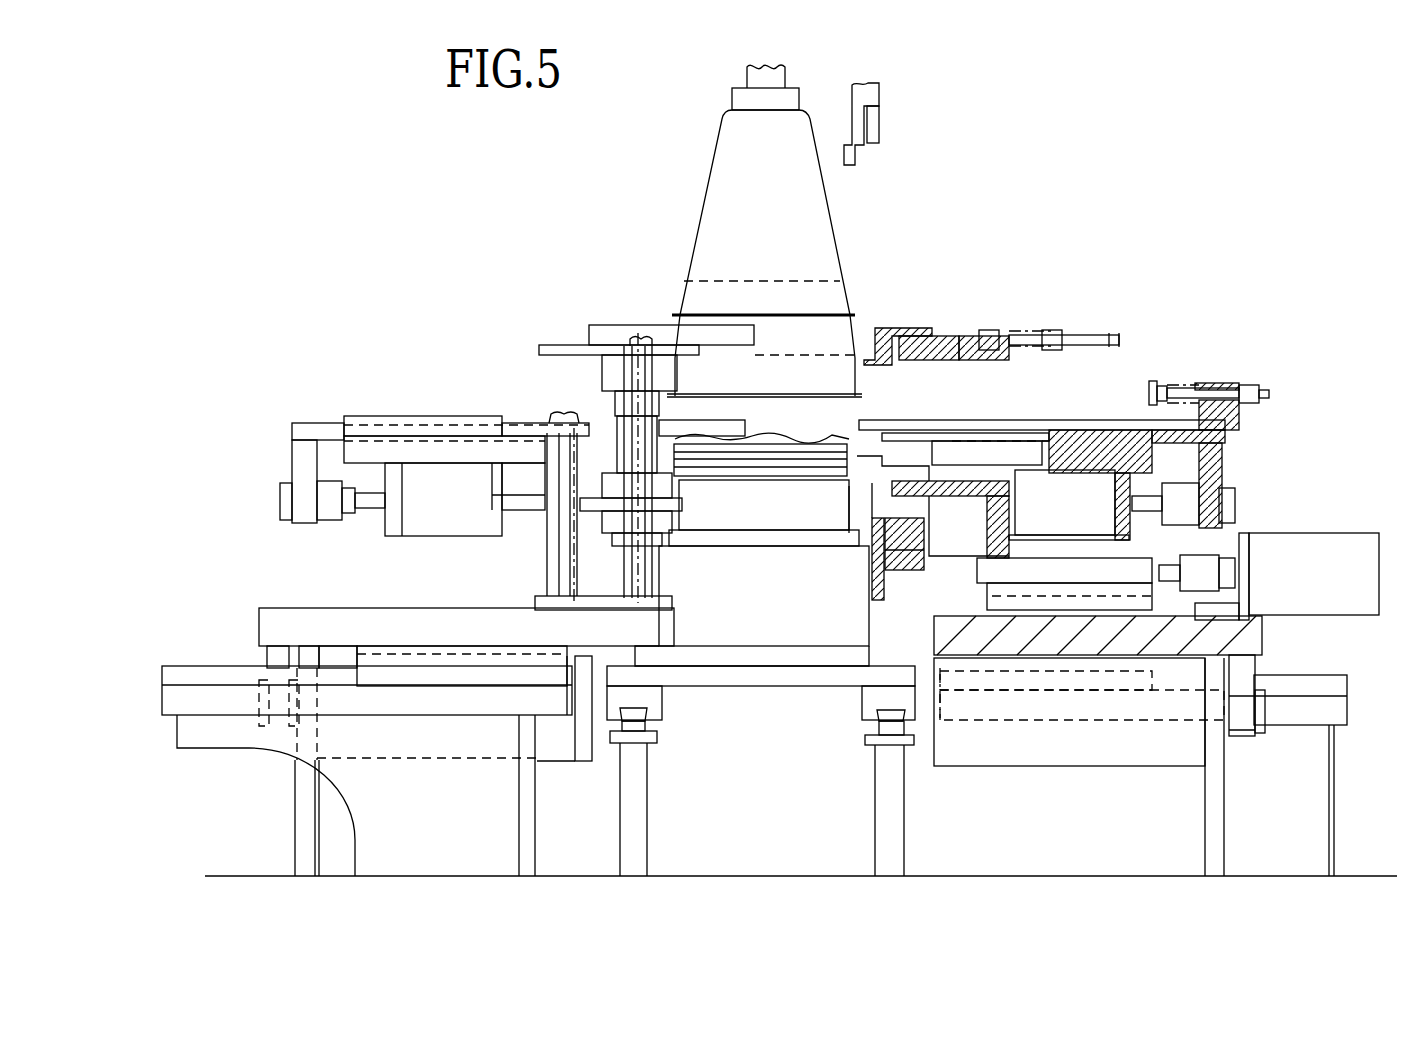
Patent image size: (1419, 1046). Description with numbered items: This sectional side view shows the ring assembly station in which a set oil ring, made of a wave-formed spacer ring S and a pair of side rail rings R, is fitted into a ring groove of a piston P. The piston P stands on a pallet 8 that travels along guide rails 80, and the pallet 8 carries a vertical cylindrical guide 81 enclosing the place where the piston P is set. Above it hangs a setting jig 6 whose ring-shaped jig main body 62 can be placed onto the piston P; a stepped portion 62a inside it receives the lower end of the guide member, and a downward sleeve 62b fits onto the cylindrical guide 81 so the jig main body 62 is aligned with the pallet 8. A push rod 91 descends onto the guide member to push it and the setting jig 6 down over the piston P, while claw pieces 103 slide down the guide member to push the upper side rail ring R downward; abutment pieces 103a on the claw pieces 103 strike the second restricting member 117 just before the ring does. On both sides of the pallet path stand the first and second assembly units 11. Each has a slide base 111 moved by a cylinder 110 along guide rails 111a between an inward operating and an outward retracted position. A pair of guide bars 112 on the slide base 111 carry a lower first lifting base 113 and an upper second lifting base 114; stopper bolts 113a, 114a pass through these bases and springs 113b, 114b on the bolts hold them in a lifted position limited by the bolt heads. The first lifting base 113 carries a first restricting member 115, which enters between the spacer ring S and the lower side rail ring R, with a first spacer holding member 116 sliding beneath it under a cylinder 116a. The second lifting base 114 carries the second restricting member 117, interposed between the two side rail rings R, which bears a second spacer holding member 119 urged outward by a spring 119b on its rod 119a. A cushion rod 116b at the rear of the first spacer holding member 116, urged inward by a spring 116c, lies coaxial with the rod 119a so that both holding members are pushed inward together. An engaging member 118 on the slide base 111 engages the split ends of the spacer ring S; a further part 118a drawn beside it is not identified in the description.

The push rod 91 is at (750, 73).
The claw pieces 103 is at (877, 90).
The abutment pieces 103a is at (877, 130).
The assembly units 11 is at (1037, 273).
The side rail ring R is at (850, 313).
The second restricting member 117 is at (650, 325).
The second spacer holding member 119 is at (907, 328).
The second lifting base 114 is at (560, 342).
The rod 119a is at (1107, 335).
The spring 119b is at (1037, 327).
The first spacer holding member 116 is at (447, 420).
The cylinder 116a is at (422, 523).
The cushion rod 116b is at (1153, 377).
The spring 116c is at (1187, 380).
The first lifting base 113 is at (517, 440).
The stopper bolt 113a is at (560, 535).
The spring 113b is at (543, 568).
The stopper bolt 114a is at (637, 372).
The spring 114b is at (625, 393).
The guide bars 112 is at (653, 567).
The first restricting member 115 is at (740, 430).
The spacer ring S is at (855, 445).
The stepped portion 62a is at (833, 470).
The piston P is at (732, 518).
The jig main body 62 is at (847, 530).
The sleeve 62b is at (867, 613).
The cylindrical guide 81 is at (865, 643).
The engaging member 118 is at (947, 492).
The setting jig 6 is at (922, 560).
The motor 118a is at (1300, 538).
The pallet 8 is at (753, 673).
The guide rails 80 is at (653, 723).
The slide base 111 is at (307, 620).
The guide rails 111a is at (202, 668).
The cylinder 110 is at (562, 750).